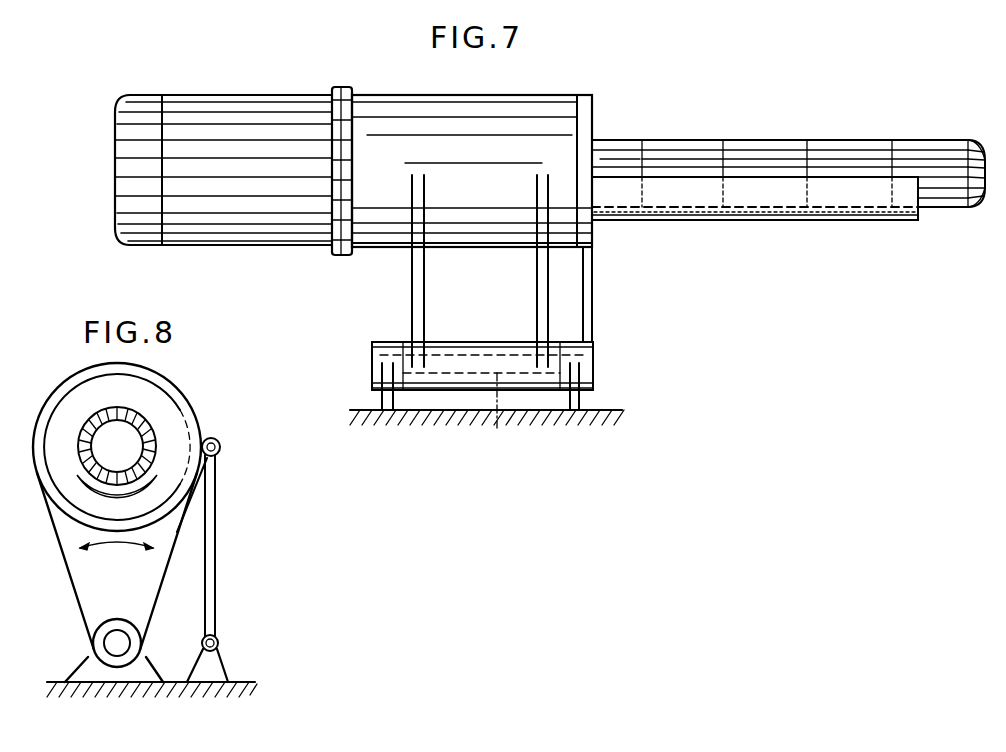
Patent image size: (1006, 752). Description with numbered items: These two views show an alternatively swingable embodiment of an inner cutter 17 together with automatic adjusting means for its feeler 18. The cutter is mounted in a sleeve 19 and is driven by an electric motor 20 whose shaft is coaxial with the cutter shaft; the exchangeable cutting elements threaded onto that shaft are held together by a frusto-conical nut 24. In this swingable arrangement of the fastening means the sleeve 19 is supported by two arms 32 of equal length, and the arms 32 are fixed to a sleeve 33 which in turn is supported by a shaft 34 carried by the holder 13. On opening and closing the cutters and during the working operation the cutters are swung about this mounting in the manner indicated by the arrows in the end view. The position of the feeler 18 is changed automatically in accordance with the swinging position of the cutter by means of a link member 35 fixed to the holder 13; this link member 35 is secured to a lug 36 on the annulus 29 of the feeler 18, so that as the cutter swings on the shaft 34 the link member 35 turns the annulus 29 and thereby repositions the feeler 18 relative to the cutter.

In FIG. 7, the holder 13 is at (612, 410).
In FIG. 8, the holder 13 is at (243, 682).
In FIG. 7, the inner cutter 17 is at (696, 150).
In FIG. 7, the feeler 18 is at (840, 196).
In FIG. 8, the feeler 18 is at (96, 487).
In FIG. 7, the sleeve 19 is at (476, 110).
In FIG. 7, the electric motor 20 is at (266, 103).
In FIG. 7, the frusto-conical nut 24 is at (975, 208).
In FIG. 8, the frusto-conical nut 24 is at (150, 435).
In FIG. 7, the annulus 29 is at (586, 113).
In FIG. 8, the annulus 29 is at (162, 405).
In FIG. 7, the arms 32 is at (412, 297).
In FIG. 7, the sleeve 33 is at (472, 347).
In FIG. 7, the shaft 34 is at (506, 414).
In FIG. 7, the link member 35 is at (592, 288).
In FIG. 8, the link member 35 is at (215, 545).
In FIG. 8, the lug 36 is at (205, 432).